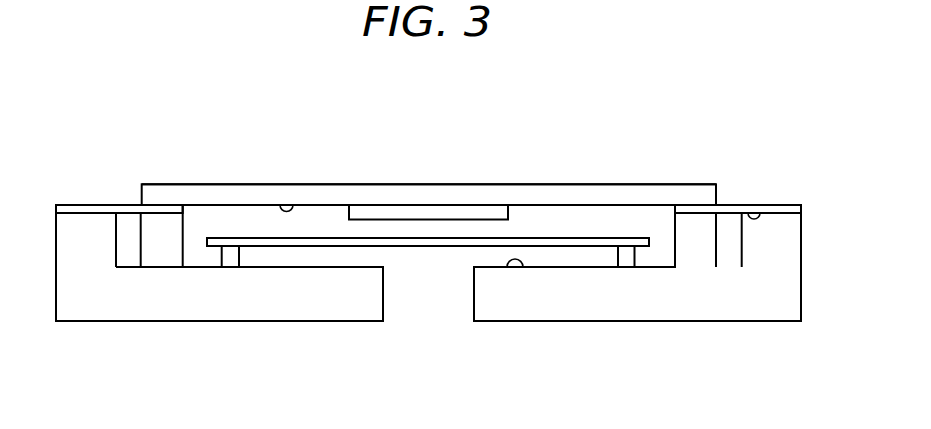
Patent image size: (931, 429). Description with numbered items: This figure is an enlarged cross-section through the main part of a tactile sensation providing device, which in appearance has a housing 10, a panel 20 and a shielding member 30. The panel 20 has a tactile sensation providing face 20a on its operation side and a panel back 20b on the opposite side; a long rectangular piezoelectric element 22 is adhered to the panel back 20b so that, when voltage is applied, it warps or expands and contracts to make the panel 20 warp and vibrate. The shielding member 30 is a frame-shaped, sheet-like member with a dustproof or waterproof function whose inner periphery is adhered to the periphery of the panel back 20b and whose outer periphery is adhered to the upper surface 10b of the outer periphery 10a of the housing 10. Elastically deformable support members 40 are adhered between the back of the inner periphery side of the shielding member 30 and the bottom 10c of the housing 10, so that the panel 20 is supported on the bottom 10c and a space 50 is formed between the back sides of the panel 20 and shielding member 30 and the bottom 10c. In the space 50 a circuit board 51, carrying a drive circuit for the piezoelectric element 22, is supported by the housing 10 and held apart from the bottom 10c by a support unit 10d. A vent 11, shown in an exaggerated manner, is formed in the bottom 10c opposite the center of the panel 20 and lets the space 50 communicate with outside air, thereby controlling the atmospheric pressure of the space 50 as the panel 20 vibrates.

The housing 10 is at (767, 323).
The outer periphery of the housing 10a is at (790, 222).
The upper surface of the outer periphery 10b is at (760, 217).
The bottom of the housing 10c is at (525, 267).
The support unit 10d is at (232, 263).
The vent 11 is at (383, 303).
The panel 20 is at (516, 195).
The tactile sensation providing face 20a is at (253, 185).
The panel back 20b is at (293, 205).
The piezoelectric element 22 is at (418, 215).
The shielding member 30 is at (98, 205).
The support member 40 is at (160, 258).
The space 50 is at (220, 222).
The circuit board 51 is at (575, 237).